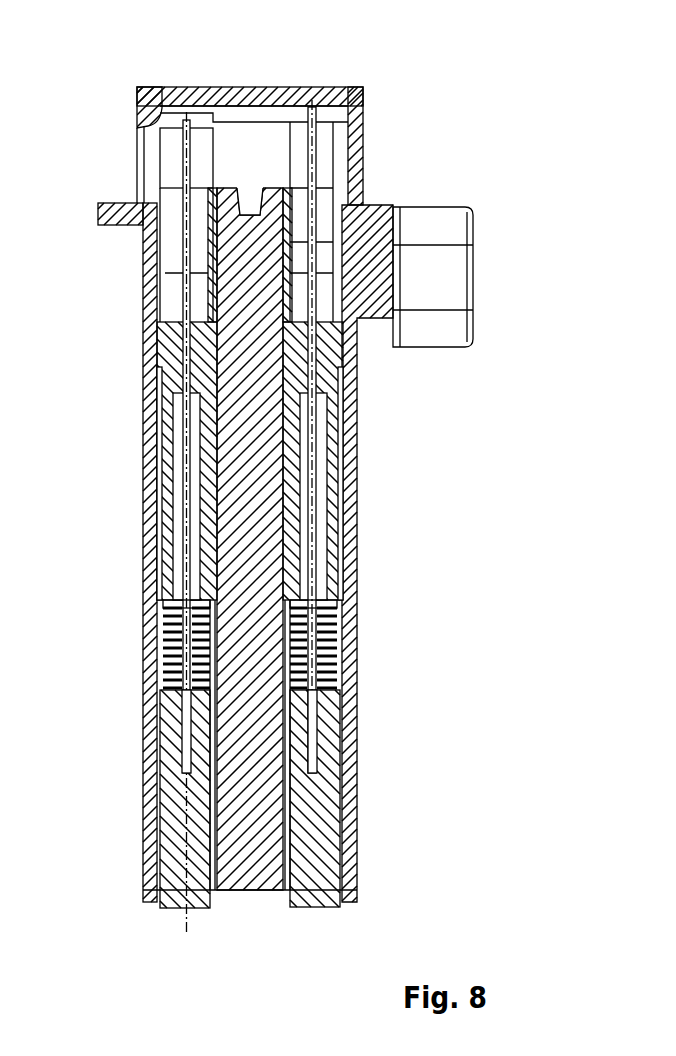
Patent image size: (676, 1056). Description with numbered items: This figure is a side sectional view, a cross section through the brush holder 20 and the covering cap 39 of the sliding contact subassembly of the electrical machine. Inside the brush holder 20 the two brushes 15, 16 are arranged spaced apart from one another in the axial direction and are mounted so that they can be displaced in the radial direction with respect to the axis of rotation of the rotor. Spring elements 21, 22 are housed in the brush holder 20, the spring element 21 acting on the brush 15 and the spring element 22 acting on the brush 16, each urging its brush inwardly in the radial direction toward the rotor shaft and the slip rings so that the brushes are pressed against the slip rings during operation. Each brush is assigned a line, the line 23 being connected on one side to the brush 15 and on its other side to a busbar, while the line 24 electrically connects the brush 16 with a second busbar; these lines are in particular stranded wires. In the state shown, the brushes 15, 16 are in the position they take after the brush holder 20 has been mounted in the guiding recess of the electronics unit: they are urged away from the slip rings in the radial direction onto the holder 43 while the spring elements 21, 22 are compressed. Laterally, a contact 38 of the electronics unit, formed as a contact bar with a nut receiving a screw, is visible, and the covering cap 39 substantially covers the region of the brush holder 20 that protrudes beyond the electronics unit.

The brush 15 is at (332, 806).
The brush 16 is at (165, 806).
The brush holder 20 is at (400, 148).
The spring element 21 is at (337, 648).
The spring element 22 is at (163, 646).
The line 23 is at (303, 140).
The line 24 is at (183, 150).
The contact 38 is at (465, 178).
The covering cap 39 is at (350, 88).
The holder 43 is at (205, 553).